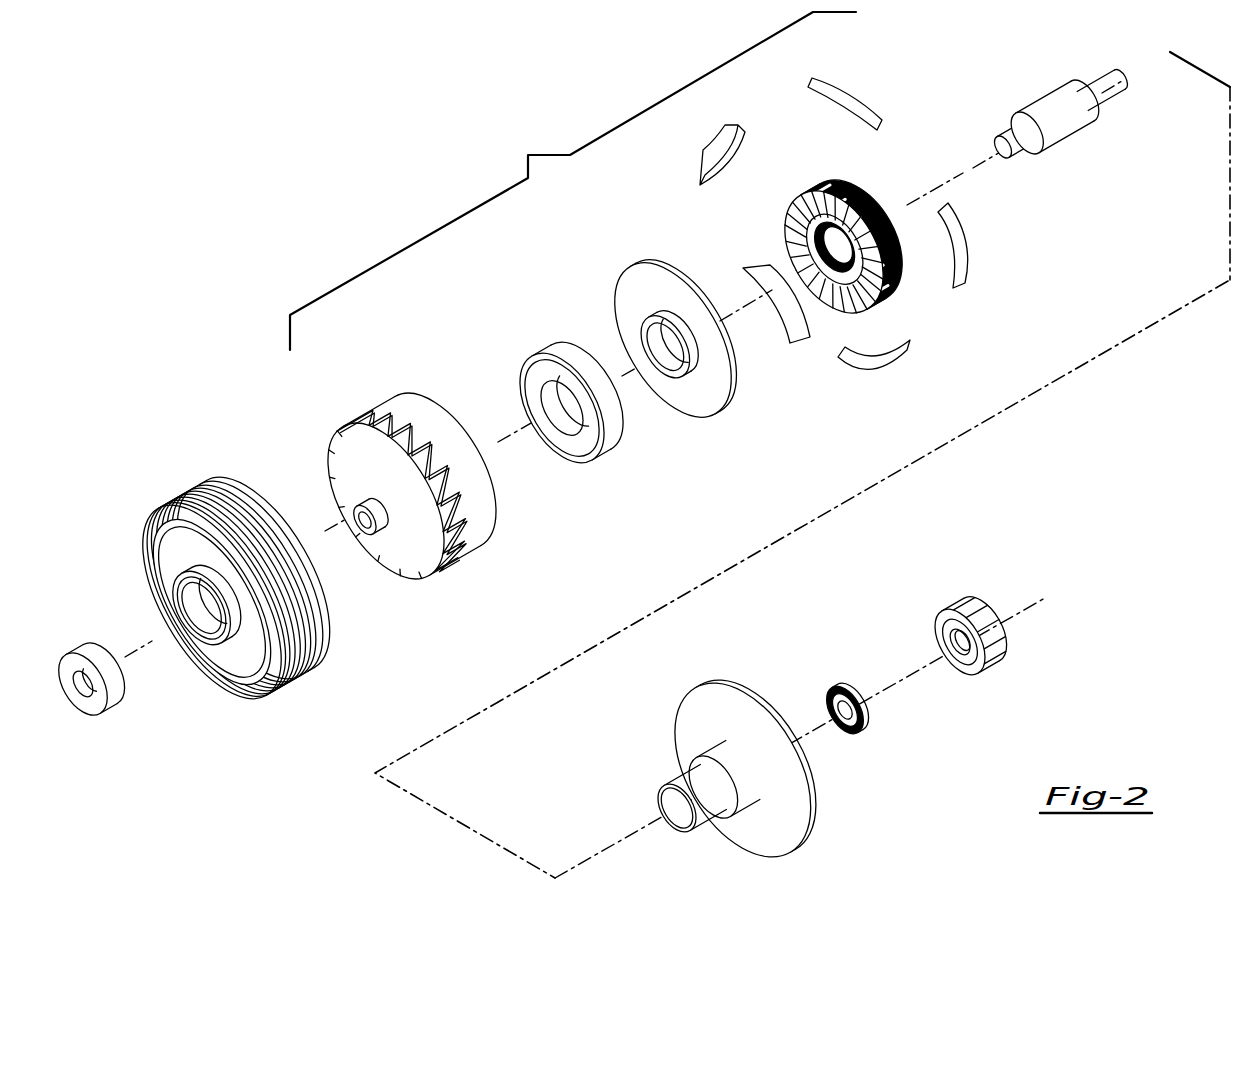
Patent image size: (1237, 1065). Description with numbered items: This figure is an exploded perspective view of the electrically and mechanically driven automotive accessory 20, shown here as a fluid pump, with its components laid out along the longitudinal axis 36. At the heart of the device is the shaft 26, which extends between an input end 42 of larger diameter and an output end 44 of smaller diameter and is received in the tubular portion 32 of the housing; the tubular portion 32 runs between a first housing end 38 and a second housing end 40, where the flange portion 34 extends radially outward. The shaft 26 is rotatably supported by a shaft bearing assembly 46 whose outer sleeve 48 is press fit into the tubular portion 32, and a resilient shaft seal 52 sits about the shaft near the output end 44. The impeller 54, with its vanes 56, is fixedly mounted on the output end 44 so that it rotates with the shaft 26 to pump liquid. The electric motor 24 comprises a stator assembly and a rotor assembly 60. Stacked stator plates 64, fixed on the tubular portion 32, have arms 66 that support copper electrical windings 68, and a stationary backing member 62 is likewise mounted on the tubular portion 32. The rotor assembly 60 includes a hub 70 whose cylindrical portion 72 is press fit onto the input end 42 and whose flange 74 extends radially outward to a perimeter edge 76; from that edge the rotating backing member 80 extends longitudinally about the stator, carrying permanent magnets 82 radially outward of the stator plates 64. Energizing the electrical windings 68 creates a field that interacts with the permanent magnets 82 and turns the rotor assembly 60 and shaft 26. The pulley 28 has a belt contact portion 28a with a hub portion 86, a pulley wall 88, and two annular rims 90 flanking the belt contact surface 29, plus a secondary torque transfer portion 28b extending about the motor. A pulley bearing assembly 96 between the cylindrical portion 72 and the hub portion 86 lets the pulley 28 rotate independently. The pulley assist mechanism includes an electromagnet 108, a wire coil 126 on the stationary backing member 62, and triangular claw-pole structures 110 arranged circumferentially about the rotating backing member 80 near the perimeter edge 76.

The electrically and mechanically driven automotive accessory 20 is at (733, 445).
The electric motor 24 is at (272, 100).
The shaft 26 is at (1074, 135).
The pulley 28 is at (250, 616).
The belt contact portion 28a is at (229, 591).
The secondary torque transfer portion 28b is at (258, 575).
The belt contact surface 29 is at (219, 597).
The tubular portion 32 is at (719, 784).
The flange portion 34 is at (745, 769).
The longitudinal axis 36 is at (903, 706).
The first housing end 38 is at (688, 801).
The second housing end 40 is at (751, 795).
The input end 42 is at (1012, 142).
The output end 44 is at (1103, 89).
The shaft bearing assembly 46 is at (1054, 117).
The outer sleeve 48 is at (1054, 117).
The shaft seal 52 is at (822, 686).
The impeller 54 is at (991, 615).
The vanes 56 is at (936, 596).
The rotor assembly 60 is at (444, 499).
The stationary backing member 62 is at (706, 402).
The stator plates 64 is at (855, 240).
The arms 66 is at (861, 236).
The electrical windings 68 is at (798, 231).
The hub 70 is at (386, 501).
The cylindrical portion 72 is at (360, 491).
The flange 74 is at (386, 501).
The perimeter edge 76 is at (364, 513).
The rotating backing member 80 is at (431, 474).
The permanent magnets 82 is at (708, 163).
The hub portion 86 is at (207, 604).
The pulley wall 88 is at (212, 601).
The annular rims 90 is at (239, 586).
The pulley bearing assembly 96 is at (90, 727).
The electromagnet 108 is at (607, 379).
The claw-pole structures 110 is at (414, 486).
The wire coil 126 is at (541, 362).